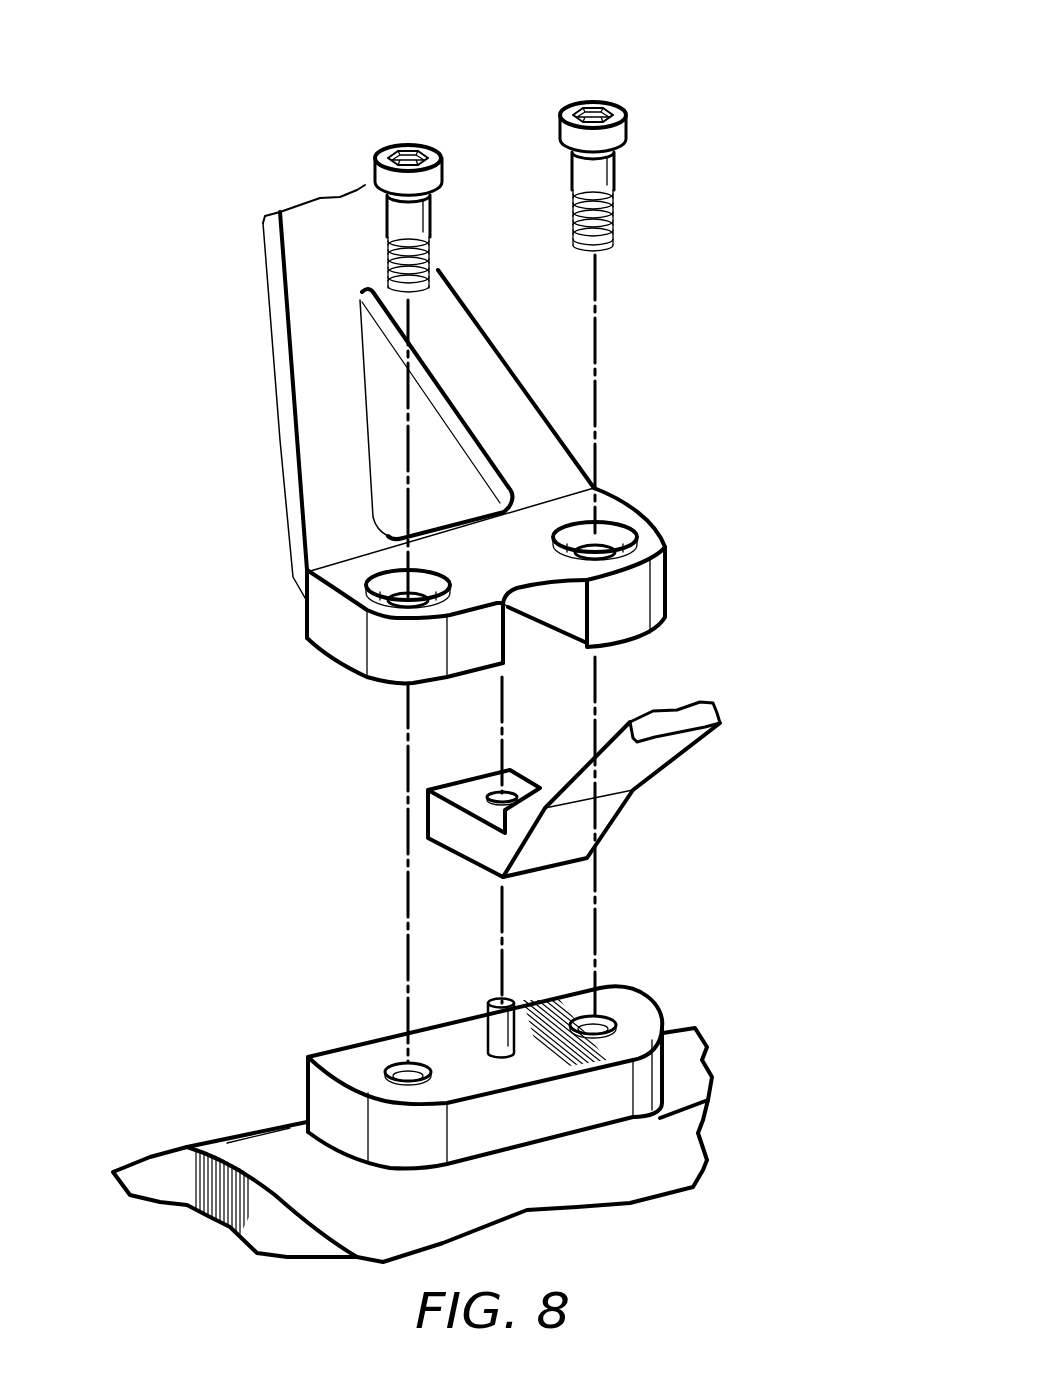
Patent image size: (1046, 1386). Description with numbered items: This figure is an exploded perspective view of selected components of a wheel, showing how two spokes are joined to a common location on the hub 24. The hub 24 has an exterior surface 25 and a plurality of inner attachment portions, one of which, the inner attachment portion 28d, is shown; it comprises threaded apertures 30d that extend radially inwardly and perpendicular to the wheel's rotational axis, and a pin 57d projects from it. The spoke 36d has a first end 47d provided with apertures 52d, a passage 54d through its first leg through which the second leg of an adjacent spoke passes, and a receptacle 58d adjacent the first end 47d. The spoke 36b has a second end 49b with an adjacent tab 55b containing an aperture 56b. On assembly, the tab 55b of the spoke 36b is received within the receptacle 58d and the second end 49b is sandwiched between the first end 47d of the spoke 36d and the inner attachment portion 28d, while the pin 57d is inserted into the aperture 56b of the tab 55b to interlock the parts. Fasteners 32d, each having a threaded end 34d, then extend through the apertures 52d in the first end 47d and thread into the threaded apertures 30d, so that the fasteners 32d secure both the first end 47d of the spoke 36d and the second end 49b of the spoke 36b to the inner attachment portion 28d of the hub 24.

The hub 24 is at (422, 1050).
The exterior surface 25 is at (210, 1140).
The inner attachment portion 28d is at (305, 1090).
The threaded aperture 30d is at (390, 1063).
The fastener 32d is at (414, 130).
The threaded end 34d is at (432, 252).
The spoke 36d is at (224, 324).
The spoke 36b is at (542, 798).
The first end 47d is at (291, 676).
The second end 49b is at (426, 800).
The aperture 52d is at (383, 595).
The passage 54d is at (365, 437).
The tab 55b is at (438, 820).
The aperture 56b is at (495, 797).
The pin 57d is at (490, 1030).
The receptacle 58d is at (535, 615).